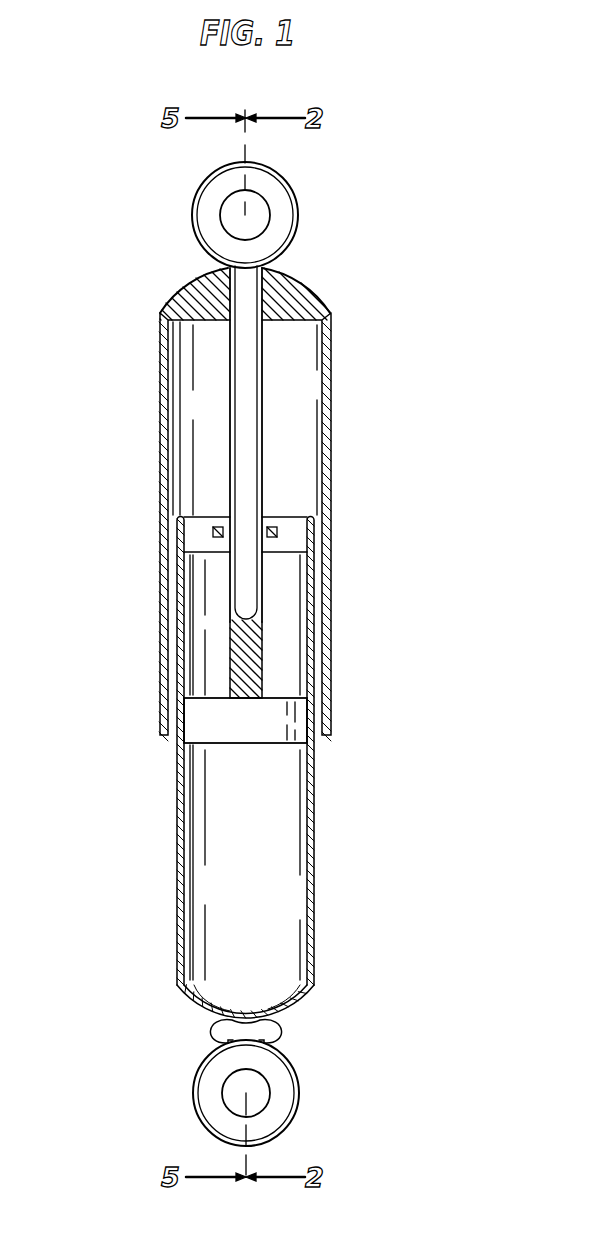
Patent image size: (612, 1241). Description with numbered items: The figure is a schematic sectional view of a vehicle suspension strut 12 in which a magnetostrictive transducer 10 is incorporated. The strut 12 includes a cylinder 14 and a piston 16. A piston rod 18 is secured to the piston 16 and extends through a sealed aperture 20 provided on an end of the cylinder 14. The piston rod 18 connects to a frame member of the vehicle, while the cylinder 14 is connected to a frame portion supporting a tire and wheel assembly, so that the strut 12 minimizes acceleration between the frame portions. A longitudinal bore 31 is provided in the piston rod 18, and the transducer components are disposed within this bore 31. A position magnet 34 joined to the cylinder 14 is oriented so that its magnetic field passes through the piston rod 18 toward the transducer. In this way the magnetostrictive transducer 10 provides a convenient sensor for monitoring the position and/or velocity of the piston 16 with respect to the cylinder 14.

The vehicle suspension strut 12 is at (370, 375).
The magnetostrictive transducer 10 is at (255, 485).
The longitudinal bore 31 is at (253, 450).
The sealed aperture 20 is at (263, 513).
The position magnet 34 is at (213, 531).
The piston rod 18 is at (263, 657).
The piston 16 is at (293, 717).
The cylinder 14 is at (313, 823).